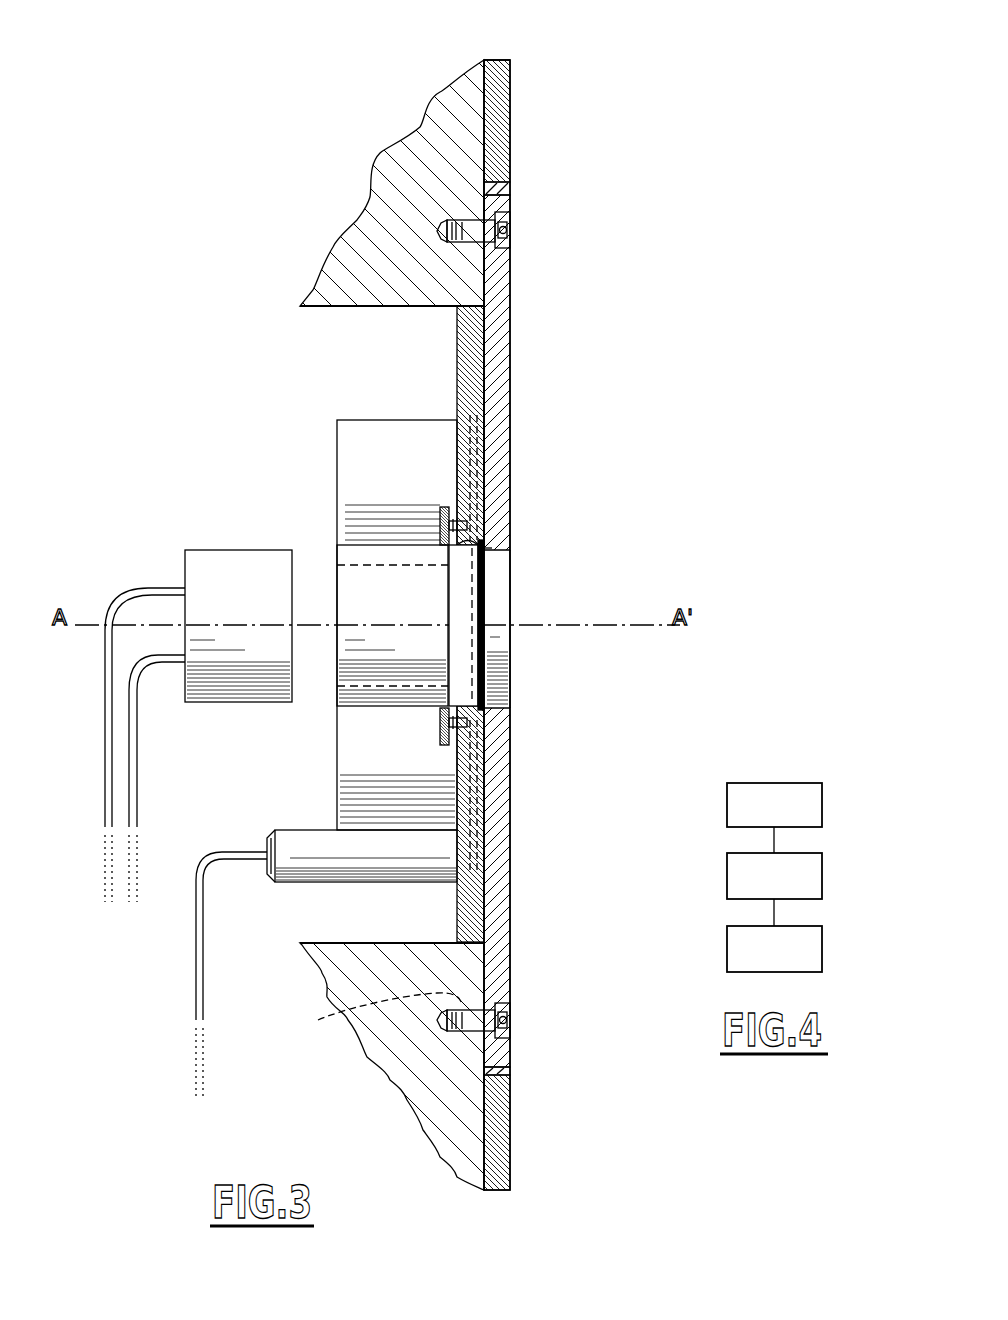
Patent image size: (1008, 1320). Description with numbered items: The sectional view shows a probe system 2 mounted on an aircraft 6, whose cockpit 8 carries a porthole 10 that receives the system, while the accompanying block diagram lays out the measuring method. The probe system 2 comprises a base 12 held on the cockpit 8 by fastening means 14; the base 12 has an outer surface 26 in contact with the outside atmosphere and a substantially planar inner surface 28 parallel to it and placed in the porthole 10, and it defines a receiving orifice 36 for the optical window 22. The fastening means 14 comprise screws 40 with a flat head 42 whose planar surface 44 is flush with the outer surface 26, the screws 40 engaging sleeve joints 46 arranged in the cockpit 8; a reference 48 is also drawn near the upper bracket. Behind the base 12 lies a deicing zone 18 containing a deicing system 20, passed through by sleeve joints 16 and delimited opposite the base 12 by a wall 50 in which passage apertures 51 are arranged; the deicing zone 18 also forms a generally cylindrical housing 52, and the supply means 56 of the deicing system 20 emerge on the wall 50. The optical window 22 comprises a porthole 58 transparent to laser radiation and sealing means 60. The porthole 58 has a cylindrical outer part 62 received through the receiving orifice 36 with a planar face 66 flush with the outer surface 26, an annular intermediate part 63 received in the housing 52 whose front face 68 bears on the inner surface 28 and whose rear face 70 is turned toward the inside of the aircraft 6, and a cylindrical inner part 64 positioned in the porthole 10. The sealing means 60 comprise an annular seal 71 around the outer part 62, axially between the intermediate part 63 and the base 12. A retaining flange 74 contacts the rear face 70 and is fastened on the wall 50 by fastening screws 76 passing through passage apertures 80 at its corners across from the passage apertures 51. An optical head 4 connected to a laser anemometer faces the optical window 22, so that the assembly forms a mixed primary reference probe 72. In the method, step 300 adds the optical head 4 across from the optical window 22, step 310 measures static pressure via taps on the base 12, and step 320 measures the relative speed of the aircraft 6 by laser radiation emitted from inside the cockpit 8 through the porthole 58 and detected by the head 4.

In FIG. 3, the probe system 2 is at (535, 300).
In FIG. 3, the optical head 4 is at (205, 520).
In FIG. 3, the aircraft 6 is at (535, 64).
In FIG. 3, the cockpit 8 is at (505, 118).
In FIG. 3, the porthole 10 is at (373, 318).
In FIG. 3, the base 12 is at (512, 933).
In FIG. 3, the fastening means 14 is at (462, 1030).
In FIG. 3, the sleeve joints 16 is at (442, 463).
In FIG. 3, the deicing zone 18 is at (480, 357).
In FIG. 3, the deicing system 20 is at (453, 840).
In FIG. 3, the optical window 22 is at (610, 544).
In FIG. 3, the outer surface 26 is at (506, 207).
In FIG. 3, the inner surface 28 is at (497, 191).
In FIG. 3, the receiving orifice 36 is at (505, 613).
In FIG. 3, the screws 40 is at (472, 1025).
In FIG. 3, the flat head 42 is at (510, 987).
In FIG. 3, the planar surface 44 is at (508, 1030).
In FIG. 3, the sleeve joints 46 is at (318, 1020).
In FIG. 3, the threaded bore 48 is at (468, 300).
In FIG. 3, the wall 50 is at (457, 372).
In FIG. 3, the passage apertures 51 is at (453, 747).
In FIG. 3, the housing 52 is at (477, 678).
In FIG. 3, the supply means 56 is at (237, 867).
In FIG. 3, the porthole 58 is at (344, 725).
In FIG. 3, the sealing means 60 is at (480, 558).
In FIG. 3, the outer part 62 is at (482, 650).
In FIG. 3, the intermediate part 63 is at (485, 707).
In FIG. 3, the inner part 64 is at (347, 677).
In FIG. 3, the planar face 66 is at (512, 577).
In FIG. 3, the front face 68 is at (493, 542).
In FIG. 3, the rear face 70 is at (442, 538).
In FIG. 3, the annular seal 71 is at (487, 547).
In FIG. 3, the mixed primary reference probe 72 is at (142, 538).
In FIG. 3, the retaining flange 74 is at (440, 713).
In FIG. 3, the fastening screws 76 is at (458, 500).
In FIG. 3, the passage apertures 80 is at (438, 733).
In FIG. 4, the step 300 is at (774, 805).
In FIG. 4, the step 310 is at (774, 876).
In FIG. 4, the step 320 is at (774, 949).